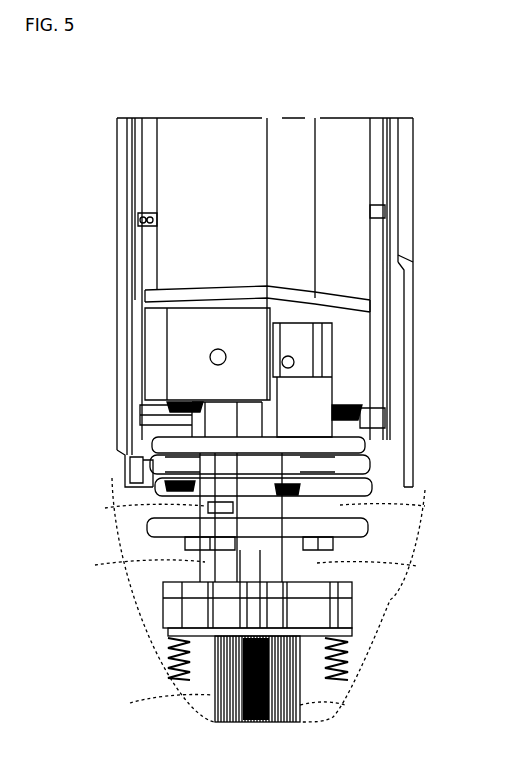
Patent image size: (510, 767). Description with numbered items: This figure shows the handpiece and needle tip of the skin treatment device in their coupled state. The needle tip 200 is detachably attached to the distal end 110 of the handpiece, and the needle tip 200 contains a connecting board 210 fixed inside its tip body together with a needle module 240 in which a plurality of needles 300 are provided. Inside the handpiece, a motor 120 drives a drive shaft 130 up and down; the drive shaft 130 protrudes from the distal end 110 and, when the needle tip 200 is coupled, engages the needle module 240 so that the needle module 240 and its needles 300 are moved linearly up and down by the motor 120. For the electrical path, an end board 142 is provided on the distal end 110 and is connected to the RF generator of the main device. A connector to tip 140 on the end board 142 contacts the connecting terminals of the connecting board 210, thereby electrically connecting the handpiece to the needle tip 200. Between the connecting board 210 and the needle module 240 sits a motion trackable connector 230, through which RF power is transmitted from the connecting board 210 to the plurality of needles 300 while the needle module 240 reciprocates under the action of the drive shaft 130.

The motor 120 is at (174, 181).
The end board 142 is at (130, 468).
The distal end 110 is at (372, 486).
The connector to tip 140 is at (167, 504).
The connecting board 210 is at (380, 523).
The motion trackable connector 230 is at (200, 556).
The drive shaft 130 is at (300, 572).
The needle module 240 is at (165, 598).
The needles 300 is at (215, 690).
The needle tip 200 is at (392, 620).